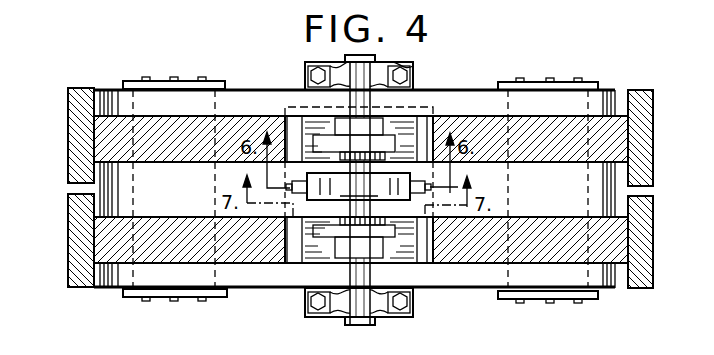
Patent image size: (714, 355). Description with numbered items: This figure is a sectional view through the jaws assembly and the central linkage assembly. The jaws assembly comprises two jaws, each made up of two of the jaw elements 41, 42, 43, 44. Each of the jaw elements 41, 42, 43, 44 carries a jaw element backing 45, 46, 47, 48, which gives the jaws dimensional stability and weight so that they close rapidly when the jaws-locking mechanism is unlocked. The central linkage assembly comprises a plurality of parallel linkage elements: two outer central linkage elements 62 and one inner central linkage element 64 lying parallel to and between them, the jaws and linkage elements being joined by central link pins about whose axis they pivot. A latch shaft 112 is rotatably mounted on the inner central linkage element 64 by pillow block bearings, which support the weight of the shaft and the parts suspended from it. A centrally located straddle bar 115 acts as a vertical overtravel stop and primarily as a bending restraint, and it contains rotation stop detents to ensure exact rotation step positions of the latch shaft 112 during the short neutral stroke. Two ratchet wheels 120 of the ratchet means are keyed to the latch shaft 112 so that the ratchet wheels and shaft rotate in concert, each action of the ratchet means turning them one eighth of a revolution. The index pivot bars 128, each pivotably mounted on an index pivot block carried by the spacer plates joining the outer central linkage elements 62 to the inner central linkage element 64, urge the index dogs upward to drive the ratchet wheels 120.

The jaw element 41 is at (122, 250).
The jaw element 42 is at (557, 253).
The jaw element 43 is at (122, 117).
The jaw element 44 is at (558, 82).
The jaw element backing 45 is at (68, 238).
The jaw element backing 46 is at (645, 231).
The jaw element backing 47 is at (68, 142).
The jaw element backing 48 is at (647, 128).
The outer central linkage element 62 is at (258, 100).
The inner central linkage element 64 is at (172, 182).
The latch shaft 112 is at (372, 273).
The straddle bar 115 is at (358, 186).
The ratchet wheel 120 is at (393, 225).
The index pivot bar 128 is at (323, 228).